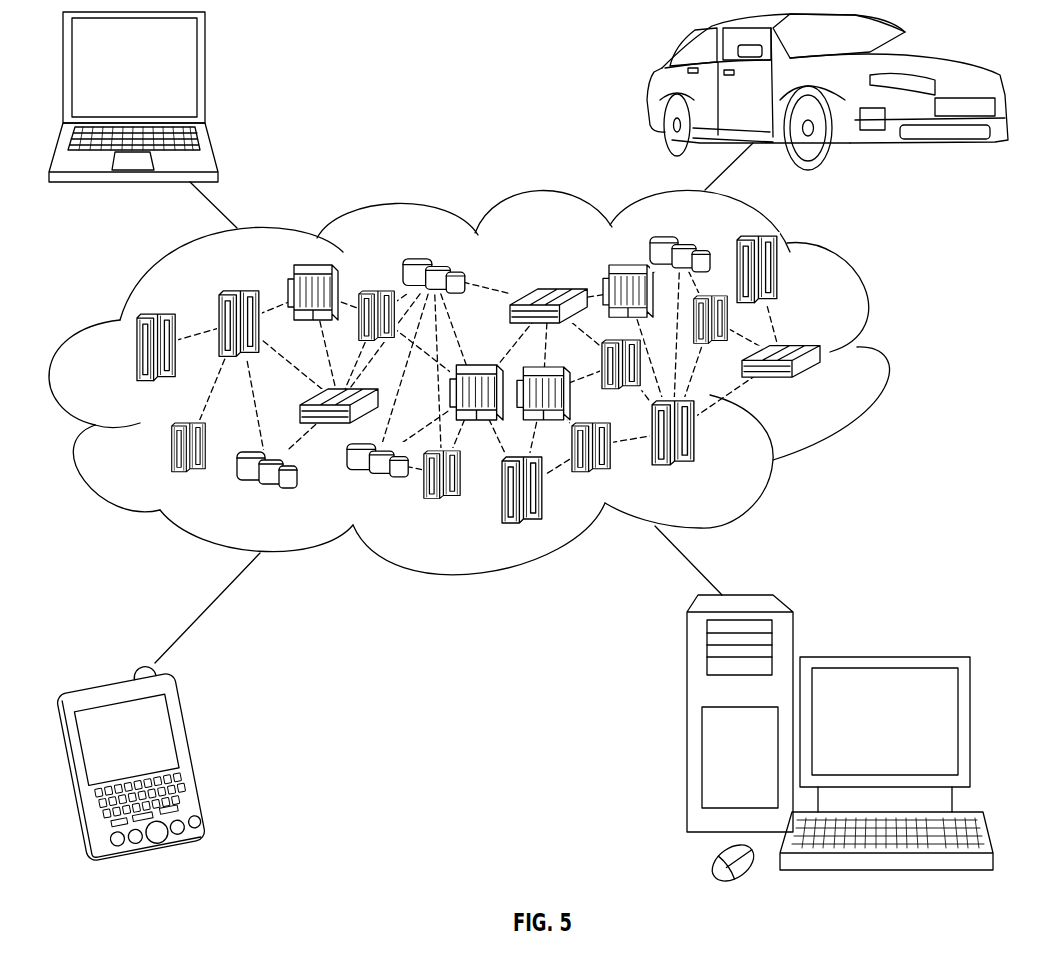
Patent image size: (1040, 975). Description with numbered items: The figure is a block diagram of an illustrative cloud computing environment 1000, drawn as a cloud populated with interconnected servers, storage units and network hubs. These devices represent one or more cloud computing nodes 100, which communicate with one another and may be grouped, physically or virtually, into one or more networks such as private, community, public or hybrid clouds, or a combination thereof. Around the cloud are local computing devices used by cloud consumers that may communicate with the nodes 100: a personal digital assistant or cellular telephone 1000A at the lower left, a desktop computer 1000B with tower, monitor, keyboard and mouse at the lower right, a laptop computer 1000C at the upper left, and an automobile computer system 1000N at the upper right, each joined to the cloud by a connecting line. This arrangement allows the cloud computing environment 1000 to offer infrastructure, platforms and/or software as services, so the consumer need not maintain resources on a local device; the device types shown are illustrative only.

The cloud computing environment 1000 is at (514, 382).
The cloud computing nodes 100 is at (820, 388).
The personal digital assistant (PDA) or cellular telephone 1000A is at (197, 752).
The desktop computer 1000B is at (882, 657).
The laptop computer 1000C is at (206, 72).
The automobile computer system 1000N is at (655, 97).